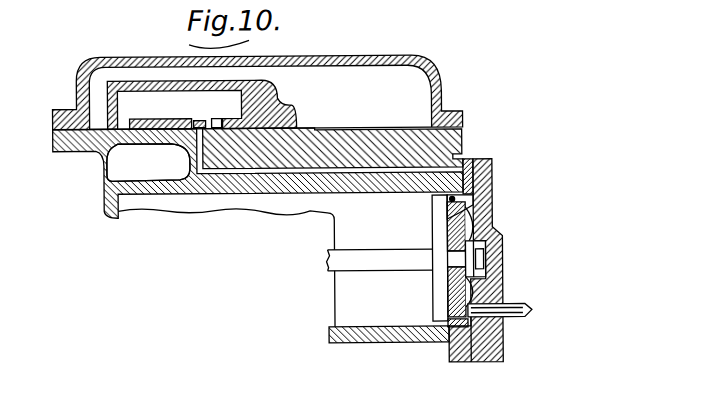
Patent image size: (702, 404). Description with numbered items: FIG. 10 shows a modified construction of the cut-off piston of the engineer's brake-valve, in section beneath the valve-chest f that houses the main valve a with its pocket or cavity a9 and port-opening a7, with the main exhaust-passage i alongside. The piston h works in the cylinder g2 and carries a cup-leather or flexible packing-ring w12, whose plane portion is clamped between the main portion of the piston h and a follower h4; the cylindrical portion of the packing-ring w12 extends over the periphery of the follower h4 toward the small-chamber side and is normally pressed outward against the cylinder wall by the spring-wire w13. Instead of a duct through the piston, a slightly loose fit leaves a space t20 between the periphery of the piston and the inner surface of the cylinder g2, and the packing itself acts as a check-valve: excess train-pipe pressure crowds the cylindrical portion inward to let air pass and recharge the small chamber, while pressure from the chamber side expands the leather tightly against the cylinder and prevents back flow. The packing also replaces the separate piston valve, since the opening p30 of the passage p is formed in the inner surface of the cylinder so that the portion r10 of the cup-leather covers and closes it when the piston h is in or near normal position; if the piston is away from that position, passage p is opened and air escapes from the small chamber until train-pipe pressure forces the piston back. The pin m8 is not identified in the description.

The main valve a is at (280, 95).
The pocket or cavity a9 is at (197, 119).
The port-opening a7 is at (216, 118).
The valve-chest f is at (257, 92).
The main exhaust-passage i is at (148, 163).
The passage p is at (315, 170).
The cup-leather or flexible packing-ring w12 is at (445, 209).
The piston h is at (432, 243).
The follower h4 is at (455, 285).
The spring-wire w13 is at (447, 321).
The cylinder g2 is at (337, 331).
The passage or space t20 is at (455, 322).
The opening p30 is at (470, 192).
The portion of the cup-leather r10 is at (480, 208).
The pin m8 is at (540, 297).